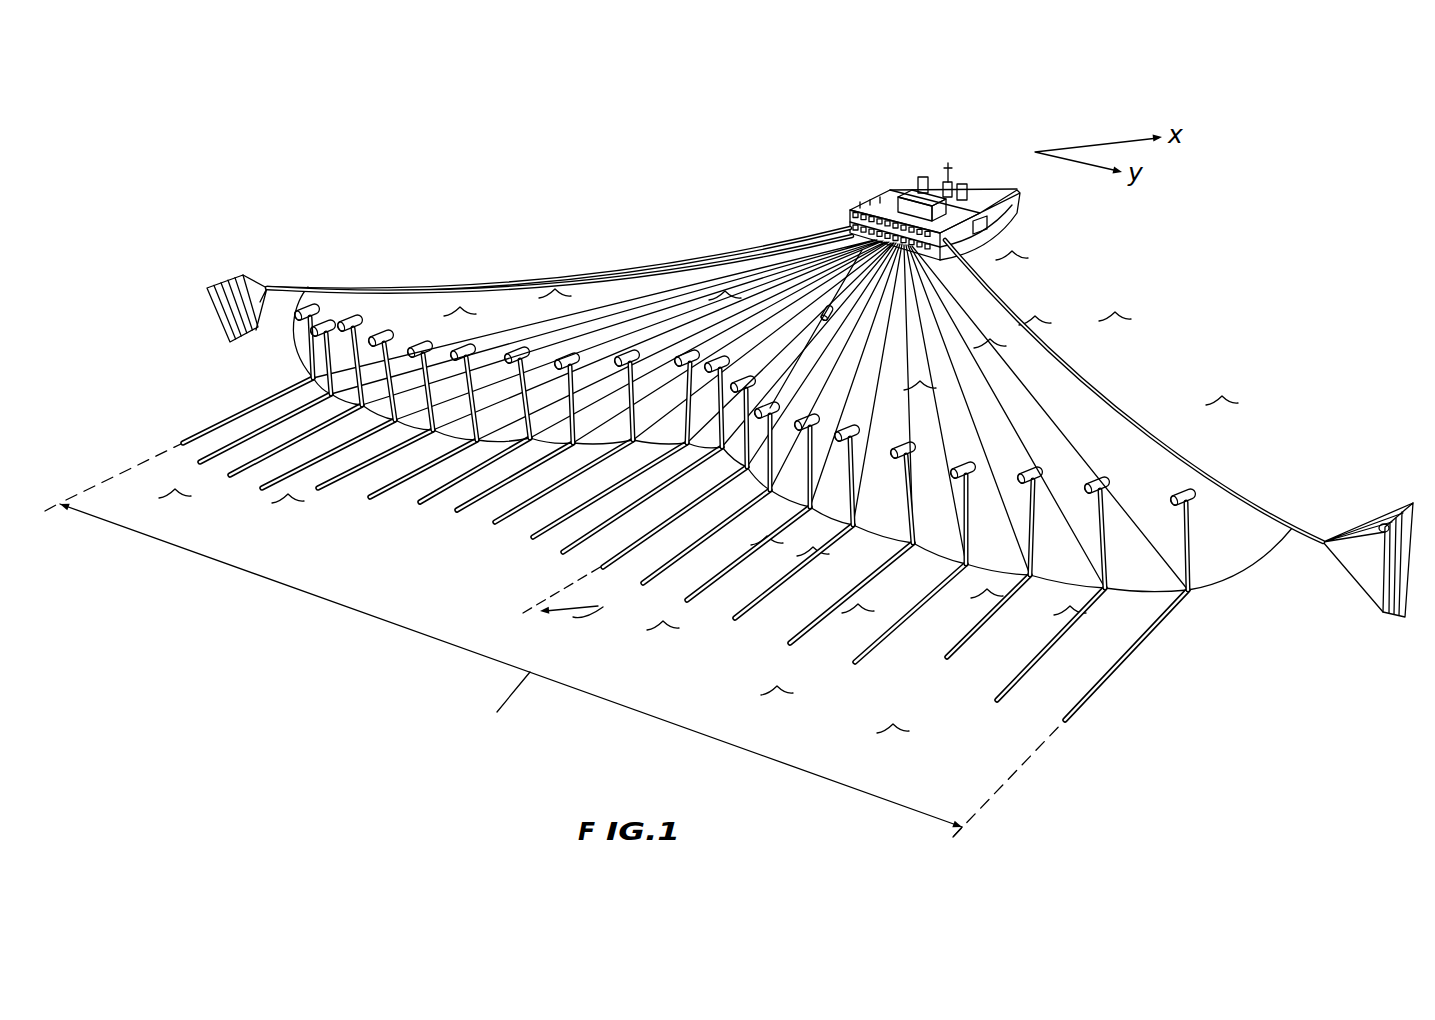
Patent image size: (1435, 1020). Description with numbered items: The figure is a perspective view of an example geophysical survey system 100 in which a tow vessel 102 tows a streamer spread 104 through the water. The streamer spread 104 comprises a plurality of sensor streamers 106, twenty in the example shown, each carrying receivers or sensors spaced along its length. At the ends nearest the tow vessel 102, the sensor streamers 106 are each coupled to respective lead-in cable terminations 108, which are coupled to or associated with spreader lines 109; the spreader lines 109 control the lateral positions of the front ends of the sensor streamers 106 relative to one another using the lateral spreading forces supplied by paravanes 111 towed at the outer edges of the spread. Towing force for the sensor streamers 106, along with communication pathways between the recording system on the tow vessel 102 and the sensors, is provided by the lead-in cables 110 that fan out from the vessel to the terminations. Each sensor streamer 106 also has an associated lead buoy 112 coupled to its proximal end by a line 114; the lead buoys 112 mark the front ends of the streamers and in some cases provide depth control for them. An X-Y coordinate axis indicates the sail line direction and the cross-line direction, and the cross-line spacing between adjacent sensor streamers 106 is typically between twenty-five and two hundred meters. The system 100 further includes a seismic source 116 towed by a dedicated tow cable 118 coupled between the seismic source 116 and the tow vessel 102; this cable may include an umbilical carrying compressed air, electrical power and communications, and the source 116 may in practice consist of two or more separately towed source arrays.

The geophysical survey system 100 is at (256, 136).
The tow vessel 102 is at (926, 203).
The streamer spread 104 is at (1175, 655).
The sensor streamer 106 is at (190, 433).
The lead-in cable termination 108 is at (316, 380).
The spreader line 109 is at (1137, 590).
The lead-in cable 110 is at (703, 284).
The paravane 111 is at (207, 284).
The lead buoy 112 is at (308, 287).
The line 114 is at (308, 347).
The seismic source 116 is at (818, 305).
The tow cable 118 is at (838, 298).